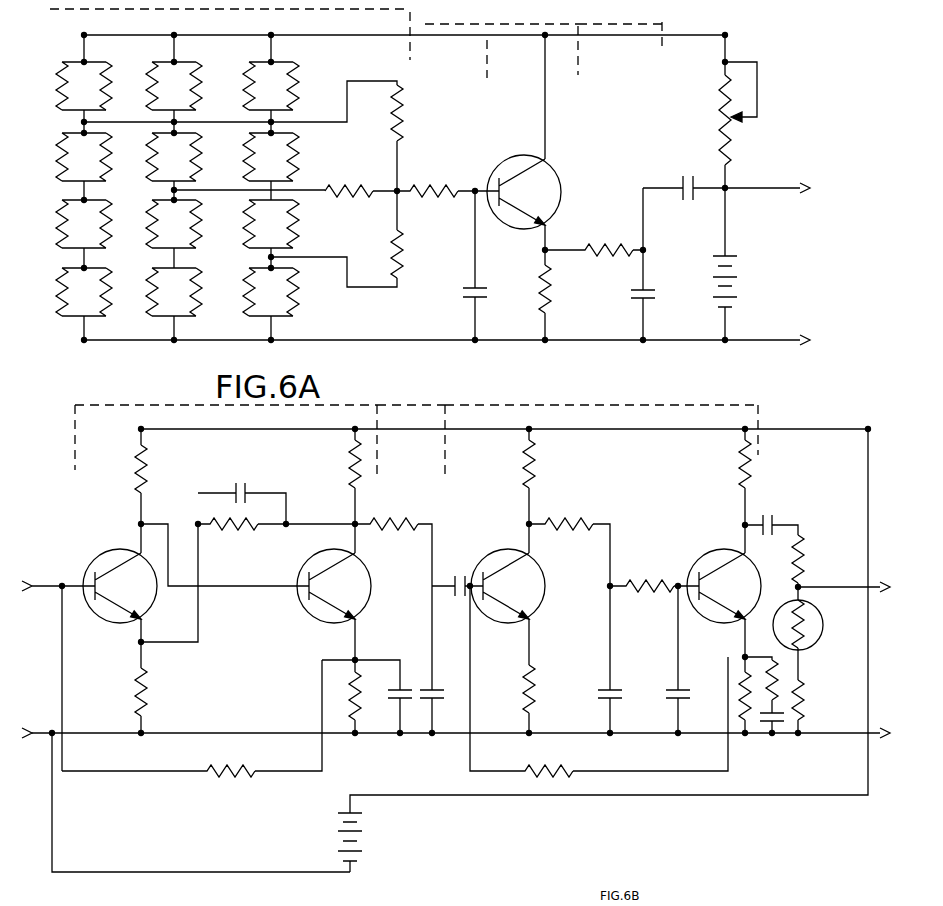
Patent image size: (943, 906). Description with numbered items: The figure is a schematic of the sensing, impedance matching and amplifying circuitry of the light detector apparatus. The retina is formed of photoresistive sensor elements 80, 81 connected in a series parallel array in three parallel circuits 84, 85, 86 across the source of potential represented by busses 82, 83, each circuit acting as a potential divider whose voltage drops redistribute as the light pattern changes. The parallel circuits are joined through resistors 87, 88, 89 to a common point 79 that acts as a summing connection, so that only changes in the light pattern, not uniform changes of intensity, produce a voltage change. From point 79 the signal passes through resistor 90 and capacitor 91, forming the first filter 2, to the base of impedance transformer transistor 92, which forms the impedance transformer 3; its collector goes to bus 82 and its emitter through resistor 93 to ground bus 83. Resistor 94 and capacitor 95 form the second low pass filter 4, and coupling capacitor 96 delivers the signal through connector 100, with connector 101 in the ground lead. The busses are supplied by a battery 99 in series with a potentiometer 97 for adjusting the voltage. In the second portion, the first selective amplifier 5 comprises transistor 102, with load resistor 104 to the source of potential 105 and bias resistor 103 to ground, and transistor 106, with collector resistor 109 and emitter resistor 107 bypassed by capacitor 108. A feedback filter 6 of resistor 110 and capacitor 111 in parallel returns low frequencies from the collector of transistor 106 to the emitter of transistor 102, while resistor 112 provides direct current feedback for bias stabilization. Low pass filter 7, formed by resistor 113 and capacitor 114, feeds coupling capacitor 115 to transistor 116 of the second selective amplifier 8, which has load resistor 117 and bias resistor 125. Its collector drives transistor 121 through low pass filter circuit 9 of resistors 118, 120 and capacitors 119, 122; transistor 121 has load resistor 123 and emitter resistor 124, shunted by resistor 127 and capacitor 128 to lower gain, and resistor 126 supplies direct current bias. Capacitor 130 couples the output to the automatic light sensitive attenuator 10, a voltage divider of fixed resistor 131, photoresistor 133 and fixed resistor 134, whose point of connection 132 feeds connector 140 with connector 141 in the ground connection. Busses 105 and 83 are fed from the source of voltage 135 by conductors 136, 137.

In FIG. 6A, the filter 2 is at (430, 19).
In FIG. 6A, the impedance transformer 3 is at (490, 22).
In FIG. 6A, the filter 4 is at (621, 22).
In FIG. 6B, the first selective amplifier 5 is at (206, 427).
In FIG. 6B, the filter 6 is at (241, 427).
In FIG. 6B, the low pass filter 7 is at (411, 427).
In FIG. 6B, the second selective amplifier 8 is at (553, 427).
In FIG. 6B, the low pass filter circuit 9 is at (591, 427).
In FIG. 6B, the automatic light sensitive attenuator 10 is at (785, 427).
In FIG. 6A, the common point 79 is at (398, 190).
In FIG. 6A, the sensor element 80 is at (58, 96).
In FIG. 6A, the sensor element 81 is at (100, 94).
In FIG. 6A, the bus 82 is at (405, 25).
In FIG. 6A, the bus 83 is at (166, 342).
In FIG. 6B, the bus 83 is at (250, 734).
In FIG. 6A, the parallel circuit 84 is at (64, 190).
In FIG. 6A, the parallel circuit 85 is at (162, 196).
In FIG. 6A, the parallel circuit 86 is at (260, 260).
In FIG. 6A, the resistor 87 is at (389, 126).
In FIG. 6A, the resistor 88 is at (342, 184).
In FIG. 6A, the resistor 89 is at (390, 242).
In FIG. 6A, the resistor 90 is at (454, 200).
In FIG. 6A, the capacitor 91 is at (476, 301).
In FIG. 6A, the impedance transformer transistor 92 is at (530, 230).
In FIG. 6A, the resistor 93 is at (550, 302).
In FIG. 6A, the resistor 94 is at (586, 258).
In FIG. 6A, the capacitor 95 is at (650, 300).
In FIG. 6A, the coupling capacitor 96 is at (679, 198).
In FIG. 6A, the potentiometer 97 is at (719, 145).
In FIG. 6A, the battery 99 is at (732, 292).
In FIG. 6A, the connector 100 is at (769, 188).
In FIG. 6B, the connector 100 is at (42, 585).
In FIG. 6A, the connector 101 is at (822, 340).
In FIG. 6B, the connector 101 is at (42, 732).
In FIG. 6B, the transistor 102 is at (116, 626).
In FIG. 6B, the bias resistor 103 is at (148, 712).
In FIG. 6B, the load resistor 104 is at (148, 474).
In FIG. 6B, the source of potential 105 is at (140, 430).
In FIG. 6B, the transistor 106 is at (326, 626).
In FIG. 6B, the resistor 107 is at (342, 696).
In FIG. 6B, the by-passing capacitor 108 is at (390, 706).
In FIG. 6B, the resistor 109 is at (334, 466).
In FIG. 6B, the resistor 110 is at (263, 530).
In FIG. 6B, the capacitor 111 is at (248, 486).
In FIG. 6B, the resistor 112 is at (201, 780).
In FIG. 6B, the resistor 113 is at (405, 524).
In FIG. 6B, the capacitor 114 is at (435, 688).
In FIG. 6B, the coupling capacitor 115 is at (444, 582).
In FIG. 6B, the transistor 116 is at (504, 556).
In FIG. 6B, the load resistor 117 is at (529, 460).
In FIG. 6B, the resistor 118 is at (586, 526).
In FIG. 6B, the capacitor 119 is at (604, 692).
In FIG. 6B, the resistor 120 is at (659, 586).
In FIG. 6B, the transistor 121 is at (727, 552).
In FIG. 6B, the capacitor 122 is at (684, 690).
In FIG. 6B, the load resistor 123 is at (732, 482).
In FIG. 6B, the bias resistor 124 is at (728, 710).
In FIG. 6B, the bias resistor 125 is at (634, 694).
In FIG. 6B, the resistor 126 is at (522, 766).
In FIG. 6B, the resistor 127 is at (770, 672).
In FIG. 6B, the capacitor 128 is at (772, 728).
In FIG. 6B, the capacitor 130 is at (780, 500).
In FIG. 6B, the fixed resistor 131 is at (800, 566).
In FIG. 6B, the point of connection 132 is at (800, 600).
In FIG. 6B, the photoresistor 133 is at (807, 634).
In FIG. 6B, the fixed resistor 134 is at (800, 720).
In FIG. 6B, the source of voltage 135 is at (366, 860).
In FIG. 6B, the conductor 136 is at (262, 872).
In FIG. 6B, the conductor 137 is at (666, 804).
In FIG. 6B, the connector 140 is at (854, 586).
In FIG. 6B, the connector 141 is at (870, 746).